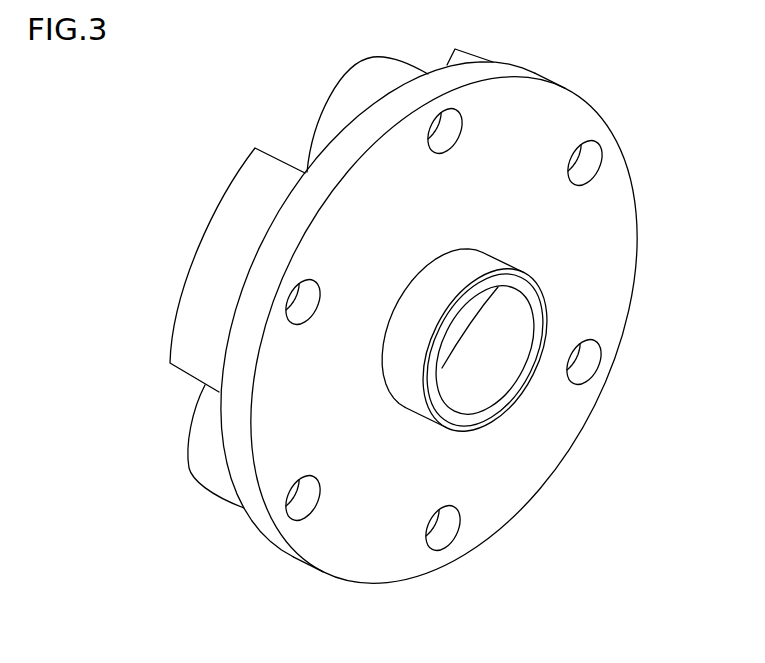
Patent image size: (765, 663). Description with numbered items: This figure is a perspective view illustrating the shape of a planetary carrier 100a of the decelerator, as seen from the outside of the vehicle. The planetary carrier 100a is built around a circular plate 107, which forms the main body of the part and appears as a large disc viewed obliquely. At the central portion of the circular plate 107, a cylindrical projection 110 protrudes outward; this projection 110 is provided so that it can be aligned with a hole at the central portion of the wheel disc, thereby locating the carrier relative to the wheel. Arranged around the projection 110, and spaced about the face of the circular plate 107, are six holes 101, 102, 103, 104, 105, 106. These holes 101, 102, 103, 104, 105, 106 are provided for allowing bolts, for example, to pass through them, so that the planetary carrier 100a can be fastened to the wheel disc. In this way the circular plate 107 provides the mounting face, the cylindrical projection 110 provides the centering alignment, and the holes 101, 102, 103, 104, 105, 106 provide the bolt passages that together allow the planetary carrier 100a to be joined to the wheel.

The planetary carrier 100a is at (590, 502).
The hole 101 is at (430, 136).
The hole 102 is at (595, 158).
The hole 103 is at (593, 363).
The hole 104 is at (454, 530).
The hole 105 is at (303, 518).
The hole 106 is at (294, 303).
The circular plate 107 is at (253, 510).
The cylindrical projection 110 is at (458, 268).